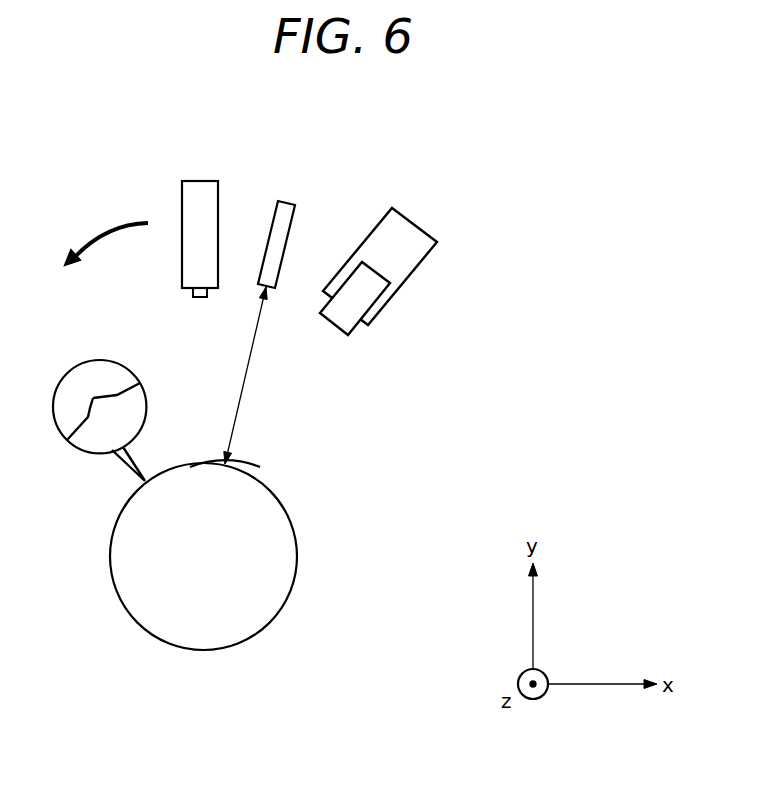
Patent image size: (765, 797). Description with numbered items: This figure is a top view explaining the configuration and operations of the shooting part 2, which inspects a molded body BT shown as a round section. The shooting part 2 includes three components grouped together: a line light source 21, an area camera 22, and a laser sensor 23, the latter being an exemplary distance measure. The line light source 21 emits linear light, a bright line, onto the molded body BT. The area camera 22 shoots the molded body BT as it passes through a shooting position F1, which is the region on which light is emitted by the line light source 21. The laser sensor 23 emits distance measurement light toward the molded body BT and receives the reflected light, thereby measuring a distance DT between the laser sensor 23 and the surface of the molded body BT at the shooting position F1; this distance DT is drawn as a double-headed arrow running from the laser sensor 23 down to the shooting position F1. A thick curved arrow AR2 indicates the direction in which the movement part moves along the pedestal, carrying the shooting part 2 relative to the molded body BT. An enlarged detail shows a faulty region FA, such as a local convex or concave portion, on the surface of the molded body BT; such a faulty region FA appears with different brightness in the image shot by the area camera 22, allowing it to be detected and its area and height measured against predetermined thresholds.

The shooting part 2 is at (418, 126).
The line light source 21 is at (203, 190).
The area camera 22 is at (393, 208).
The laser sensor 23 is at (290, 213).
The arrow AR2 is at (119, 240).
The faulty region FA is at (93, 398).
The shooting position F1 is at (224, 461).
The distance DT is at (248, 363).
The molded body BT is at (118, 569).